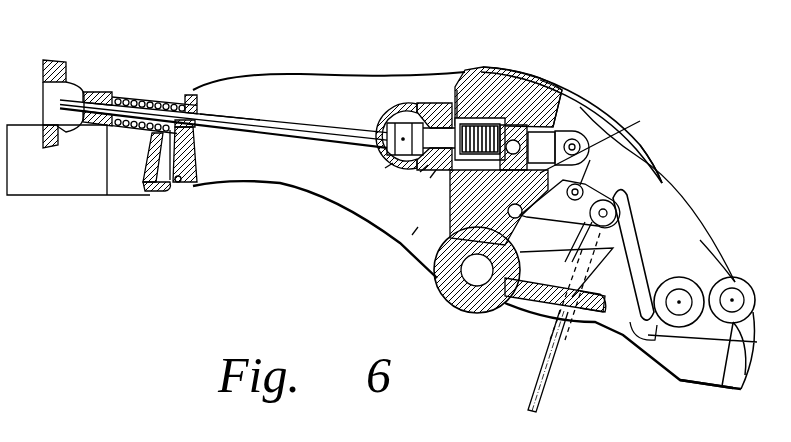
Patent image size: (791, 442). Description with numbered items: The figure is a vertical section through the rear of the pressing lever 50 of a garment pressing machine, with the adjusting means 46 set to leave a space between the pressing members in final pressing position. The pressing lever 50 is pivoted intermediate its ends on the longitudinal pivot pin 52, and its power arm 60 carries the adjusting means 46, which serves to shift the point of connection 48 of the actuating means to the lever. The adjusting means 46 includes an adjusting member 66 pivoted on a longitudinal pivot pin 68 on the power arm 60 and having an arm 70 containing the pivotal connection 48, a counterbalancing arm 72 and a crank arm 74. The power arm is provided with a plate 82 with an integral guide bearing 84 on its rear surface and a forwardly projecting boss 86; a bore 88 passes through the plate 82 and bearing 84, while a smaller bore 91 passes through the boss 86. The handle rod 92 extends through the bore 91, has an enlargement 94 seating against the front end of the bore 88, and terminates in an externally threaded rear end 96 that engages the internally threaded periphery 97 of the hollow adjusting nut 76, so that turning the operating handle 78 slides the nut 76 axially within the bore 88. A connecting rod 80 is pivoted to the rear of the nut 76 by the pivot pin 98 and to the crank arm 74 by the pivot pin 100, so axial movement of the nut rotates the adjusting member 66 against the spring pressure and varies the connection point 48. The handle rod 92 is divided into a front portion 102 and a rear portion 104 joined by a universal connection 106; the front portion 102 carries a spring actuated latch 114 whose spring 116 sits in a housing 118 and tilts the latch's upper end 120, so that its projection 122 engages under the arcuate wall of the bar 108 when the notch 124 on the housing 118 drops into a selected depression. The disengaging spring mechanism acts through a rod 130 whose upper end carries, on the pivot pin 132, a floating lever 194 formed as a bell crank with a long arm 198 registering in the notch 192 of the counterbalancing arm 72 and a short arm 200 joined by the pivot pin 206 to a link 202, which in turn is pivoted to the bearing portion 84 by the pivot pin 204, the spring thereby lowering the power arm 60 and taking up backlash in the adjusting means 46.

The adjusting means 46 is at (688, 201).
The point of connection 48 is at (733, 299).
The pressing lever 50 is at (365, 88).
The longitudinal pivot pin 52 is at (460, 277).
The power arm 60 is at (604, 212).
The adjusting member 66 is at (705, 247).
The longitudinal pivot pin 68 is at (677, 304).
The arm 70 is at (745, 382).
The counterbalancing arm 72 is at (635, 292).
The crank arm 74 is at (640, 121).
The axially movable means 76 is at (514, 143).
The operating handle 78 is at (62, 64).
The connecting rod 80 is at (574, 140).
The plate 82 is at (470, 123).
The guide bearing 84 is at (520, 102).
The boss 86 is at (433, 117).
The bore 88 is at (495, 130).
The bore 91 is at (420, 172).
The handle rod 92 is at (233, 118).
The enlargement 94 is at (430, 178).
The externally threaded rear end 96 is at (487, 132).
The internally threaded periphery 97 is at (463, 105).
The pivot pin 98 is at (576, 130).
The pivot pin 100 is at (555, 135).
The front portion 102 is at (215, 114).
The rear portion 104 is at (412, 235).
The universal connection 106 is at (385, 168).
The bar 108 is at (146, 192).
The spring actuated latch 114 is at (194, 132).
The spring 116 is at (140, 100).
The housing 118 is at (128, 93).
The upper end 120 is at (200, 128).
The projection 122 is at (166, 191).
The notch 124 is at (147, 130).
The rod 130 is at (540, 404).
The pivot pin 132 is at (666, 178).
The notch 192 is at (608, 347).
The floating lever 194 is at (547, 310).
The long arm 198 is at (598, 338).
The short arm 200 is at (658, 150).
The link 202 is at (554, 205).
The pivot pin 204 is at (452, 218).
The pivot pin 206 is at (590, 160).